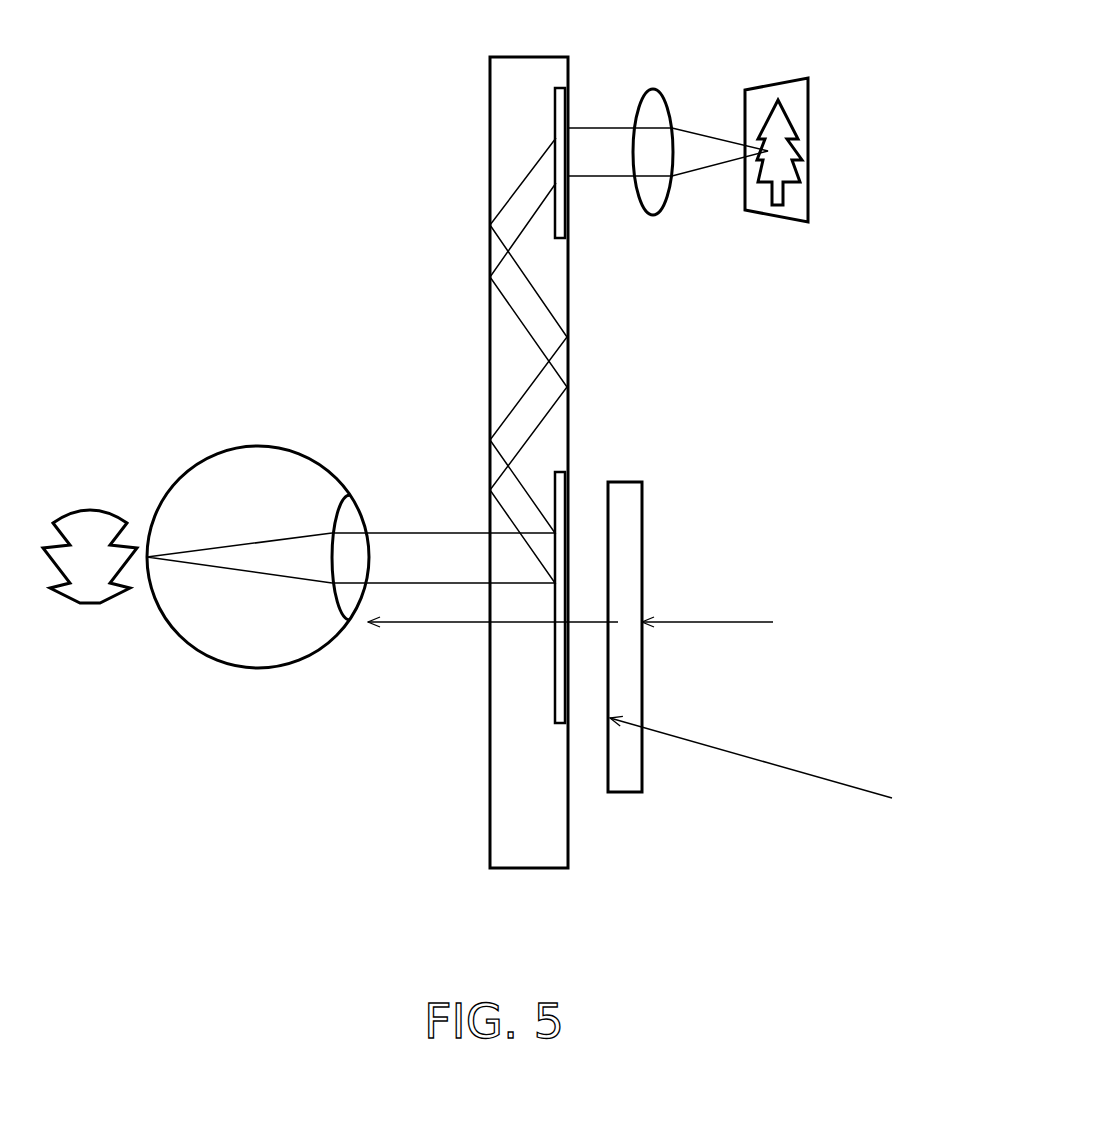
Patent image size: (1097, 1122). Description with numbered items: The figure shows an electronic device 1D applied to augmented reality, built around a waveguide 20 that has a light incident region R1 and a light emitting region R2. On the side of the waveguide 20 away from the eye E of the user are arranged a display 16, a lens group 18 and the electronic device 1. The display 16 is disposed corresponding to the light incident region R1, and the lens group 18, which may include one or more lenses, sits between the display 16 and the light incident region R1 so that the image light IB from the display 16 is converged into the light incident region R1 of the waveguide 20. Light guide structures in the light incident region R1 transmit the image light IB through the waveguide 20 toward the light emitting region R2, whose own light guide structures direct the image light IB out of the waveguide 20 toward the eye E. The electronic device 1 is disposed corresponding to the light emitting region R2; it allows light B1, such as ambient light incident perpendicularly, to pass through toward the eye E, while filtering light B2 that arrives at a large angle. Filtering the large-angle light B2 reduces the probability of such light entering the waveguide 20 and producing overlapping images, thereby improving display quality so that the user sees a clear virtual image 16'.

The electronic device 1 is at (624, 792).
The electronic device 1D is at (960, 934).
The display 16 is at (776, 125).
The virtual image 16' is at (90, 529).
The lens group 18 is at (652, 88).
The waveguide 20 is at (528, 868).
The light incident region R1 is at (570, 102).
The light emitting region R2 is at (570, 503).
The image light IB is at (706, 132).
The eye E is at (256, 445).
The light B1 is at (589, 623).
The light B2 is at (770, 768).